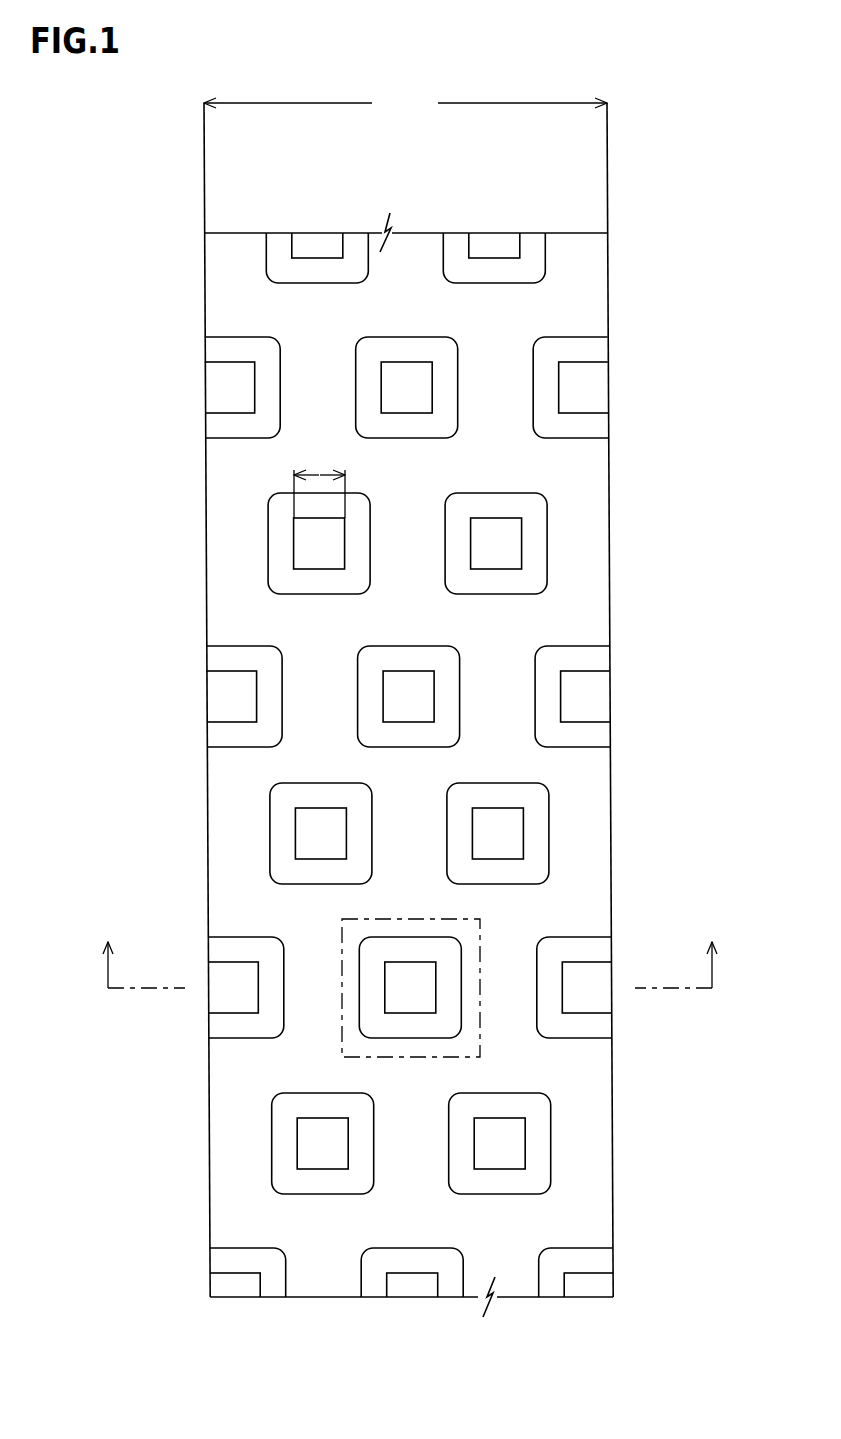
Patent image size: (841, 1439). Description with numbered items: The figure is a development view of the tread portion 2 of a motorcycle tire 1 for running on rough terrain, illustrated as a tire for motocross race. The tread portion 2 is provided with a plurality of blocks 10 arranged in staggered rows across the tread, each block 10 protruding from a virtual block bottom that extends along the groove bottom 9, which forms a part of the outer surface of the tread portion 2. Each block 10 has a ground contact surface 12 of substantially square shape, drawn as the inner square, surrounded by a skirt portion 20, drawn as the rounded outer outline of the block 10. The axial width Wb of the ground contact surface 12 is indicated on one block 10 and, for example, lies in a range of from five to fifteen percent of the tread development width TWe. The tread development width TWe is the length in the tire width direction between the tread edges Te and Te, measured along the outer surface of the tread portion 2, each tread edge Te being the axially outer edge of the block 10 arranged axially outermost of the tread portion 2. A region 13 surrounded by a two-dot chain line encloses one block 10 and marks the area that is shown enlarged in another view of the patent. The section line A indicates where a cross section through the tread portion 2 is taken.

The tire 1 is at (517, 217).
The tread portion 2 is at (402, 752).
The groove bottom 9 is at (319, 315).
The block 10 is at (402, 765).
The ground contact surface 12 is at (495, 550).
The region 13 is at (480, 935).
The skirt portion 20 is at (530, 543).
The tread development width TWe is at (405, 104).
The axial width of the ground contact surface Wb is at (319, 479).
The tread edge Te is at (204, 233).
The section line A- A is at (410, 951).